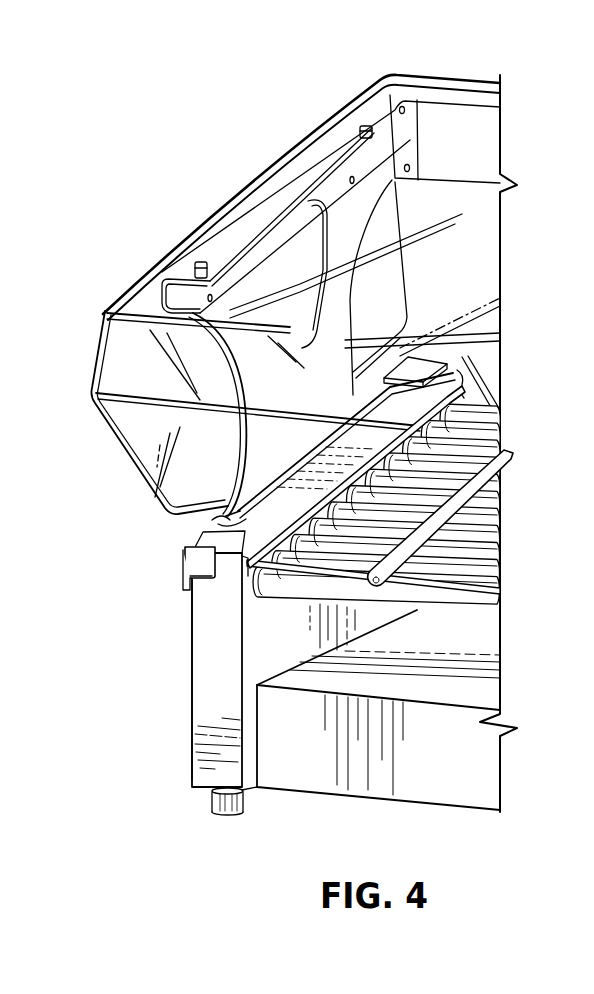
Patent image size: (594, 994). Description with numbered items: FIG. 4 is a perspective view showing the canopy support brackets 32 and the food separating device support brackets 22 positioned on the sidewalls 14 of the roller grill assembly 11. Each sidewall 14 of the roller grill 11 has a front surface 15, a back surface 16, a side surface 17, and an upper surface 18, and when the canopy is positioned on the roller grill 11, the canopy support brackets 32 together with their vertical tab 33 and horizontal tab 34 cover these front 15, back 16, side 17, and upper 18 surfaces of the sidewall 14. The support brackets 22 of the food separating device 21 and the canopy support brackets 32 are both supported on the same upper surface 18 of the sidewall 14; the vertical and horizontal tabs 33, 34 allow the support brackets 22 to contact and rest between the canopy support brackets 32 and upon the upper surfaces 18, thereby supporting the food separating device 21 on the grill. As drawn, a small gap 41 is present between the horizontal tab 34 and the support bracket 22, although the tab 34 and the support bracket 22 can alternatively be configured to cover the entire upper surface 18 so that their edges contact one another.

The roller grill assembly 11 is at (153, 716).
The sidewalls 14 is at (169, 673).
The front surface 15 is at (207, 758).
The back surface 16 is at (463, 378).
The side surface 17 is at (193, 672).
The upper surface 18 is at (233, 518).
The food separating device 21 is at (473, 492).
The support brackets 22 is at (262, 508).
The canopy support brackets 32 is at (244, 488).
The vertical tab 33 is at (200, 580).
The horizontal tab 34 is at (200, 537).
The gap 41 is at (213, 517).